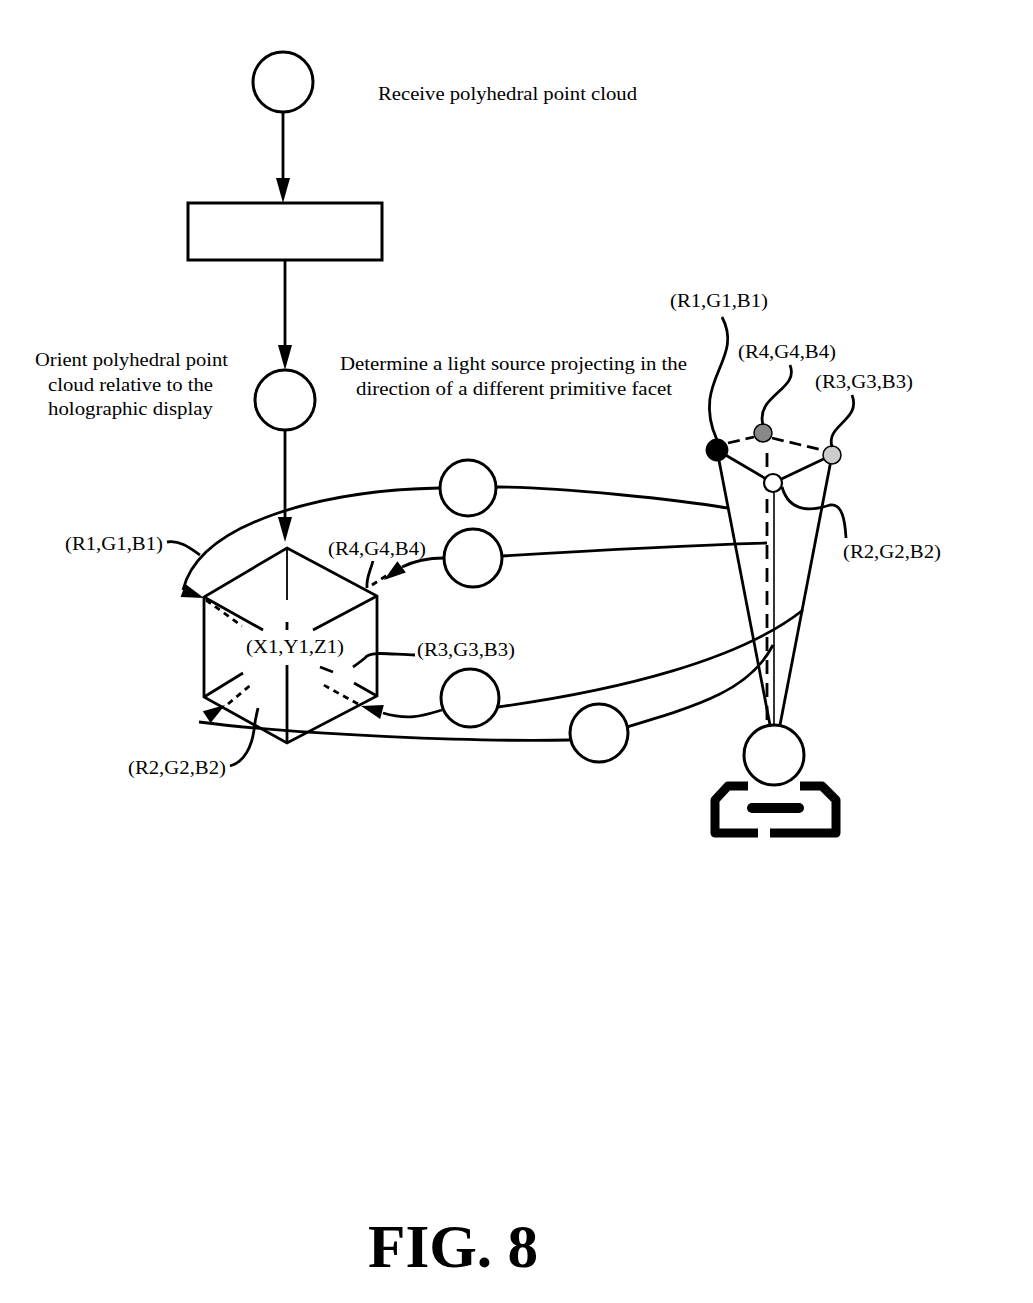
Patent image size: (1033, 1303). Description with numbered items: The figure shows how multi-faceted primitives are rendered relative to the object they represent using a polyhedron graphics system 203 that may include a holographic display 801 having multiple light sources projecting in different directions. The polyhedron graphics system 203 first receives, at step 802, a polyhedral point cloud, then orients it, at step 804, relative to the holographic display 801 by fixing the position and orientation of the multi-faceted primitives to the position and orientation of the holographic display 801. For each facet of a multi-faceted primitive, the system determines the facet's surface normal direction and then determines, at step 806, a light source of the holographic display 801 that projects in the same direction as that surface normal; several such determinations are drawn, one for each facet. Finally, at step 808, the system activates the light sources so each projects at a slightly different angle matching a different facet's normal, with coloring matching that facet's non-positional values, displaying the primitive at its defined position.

The receiving step 802 is at (376, 97).
The polyhedron graphics system 203 is at (300, 240).
The orienting step 804 is at (222, 381).
The light source determining step 806 is at (502, 405).
The activating step 808 is at (789, 765).
The holographic display 801 is at (841, 808).